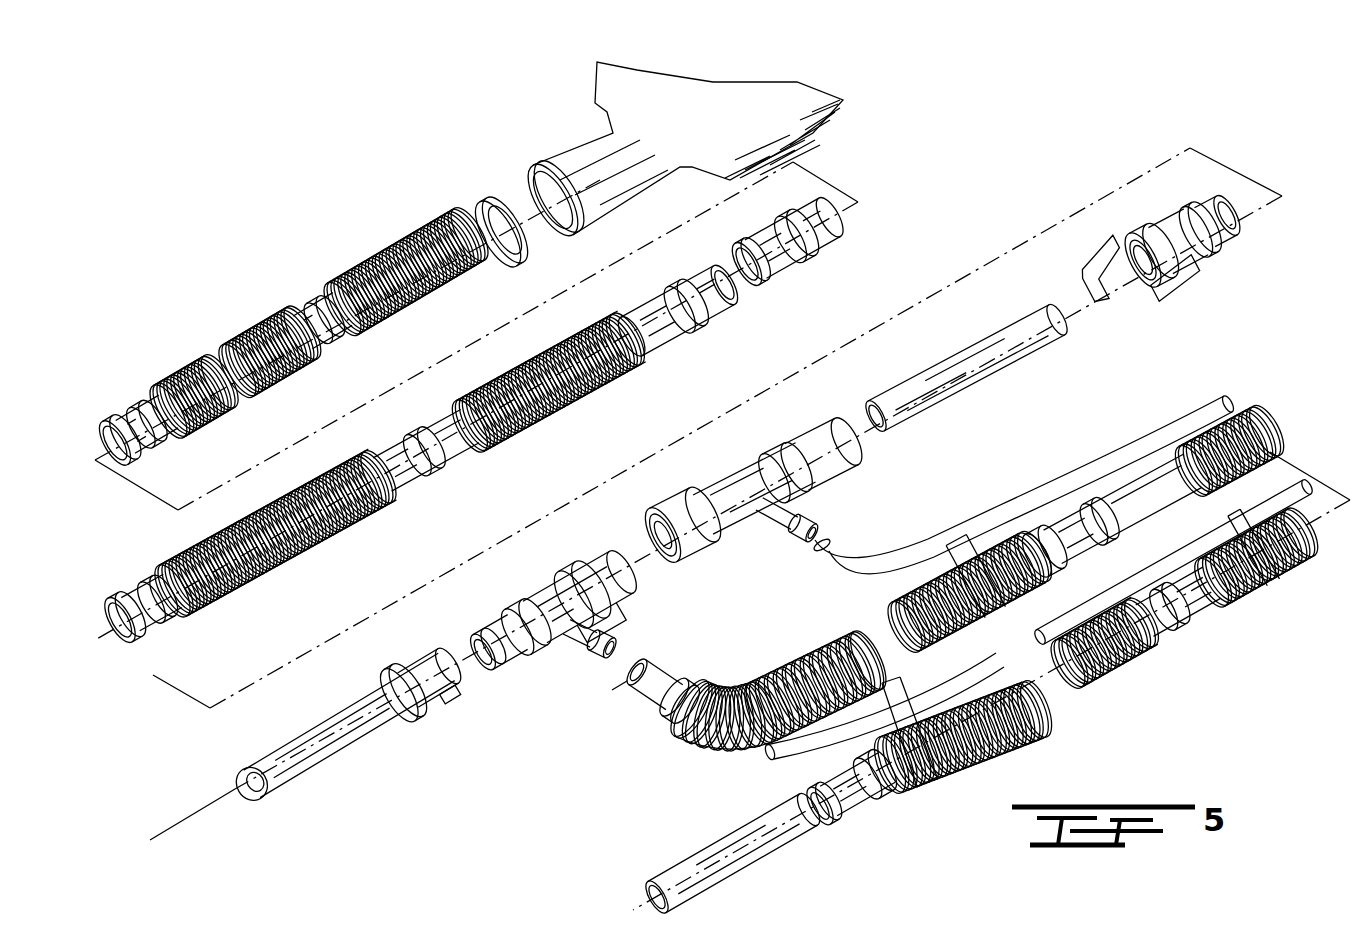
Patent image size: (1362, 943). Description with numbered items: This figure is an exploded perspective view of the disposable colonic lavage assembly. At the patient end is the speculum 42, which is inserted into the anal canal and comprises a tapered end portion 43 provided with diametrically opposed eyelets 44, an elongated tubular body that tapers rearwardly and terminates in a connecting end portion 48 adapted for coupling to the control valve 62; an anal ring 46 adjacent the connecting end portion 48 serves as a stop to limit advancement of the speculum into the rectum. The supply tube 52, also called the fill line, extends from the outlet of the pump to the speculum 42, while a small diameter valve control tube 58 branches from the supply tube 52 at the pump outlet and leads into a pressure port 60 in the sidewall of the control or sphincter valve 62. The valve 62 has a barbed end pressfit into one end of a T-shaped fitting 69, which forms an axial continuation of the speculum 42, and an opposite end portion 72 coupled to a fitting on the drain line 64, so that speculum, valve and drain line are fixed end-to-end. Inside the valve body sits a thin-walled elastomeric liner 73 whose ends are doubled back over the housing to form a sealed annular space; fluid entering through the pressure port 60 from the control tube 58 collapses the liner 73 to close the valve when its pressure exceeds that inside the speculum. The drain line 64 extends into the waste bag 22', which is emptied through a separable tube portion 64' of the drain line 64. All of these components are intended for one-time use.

The waste bag 22' is at (710, 152).
The separable tube portion 64' is at (293, 338).
The drain line 64 is at (474, 420).
The elastomeric liner 73 is at (968, 378).
The opposite end portion 72 is at (807, 424).
The control valve 62 is at (736, 454).
The pressure port 60 is at (795, 507).
The T-shaped fitting 69 is at (527, 590).
The speculum 42 is at (293, 728).
The tapered end portion 43 is at (220, 795).
The eyelets 44 is at (253, 797).
The anal ring 46 is at (423, 717).
The connecting end portion 48 is at (460, 692).
The valve control tube 58 is at (1120, 592).
The supply tube 52 is at (1113, 668).